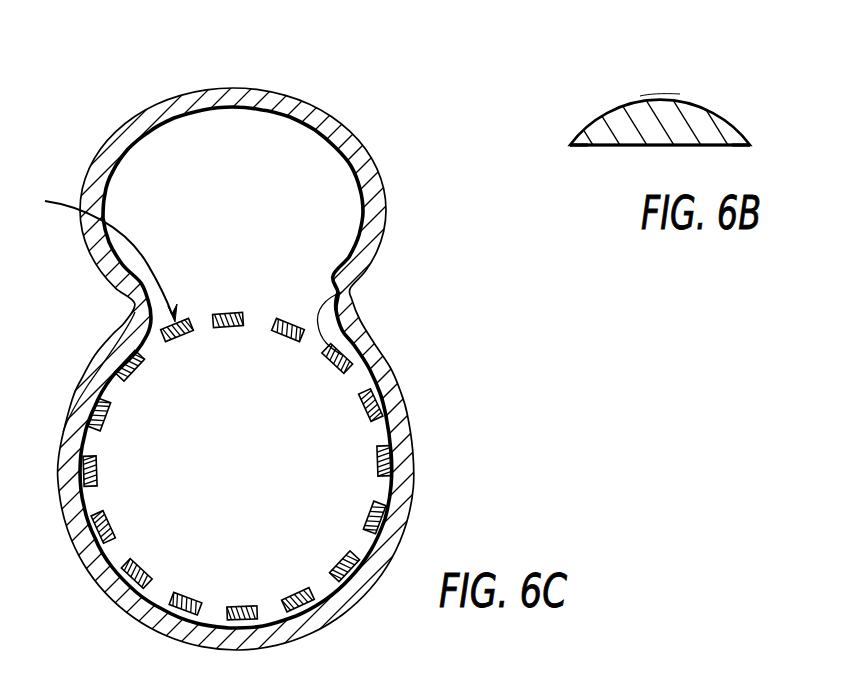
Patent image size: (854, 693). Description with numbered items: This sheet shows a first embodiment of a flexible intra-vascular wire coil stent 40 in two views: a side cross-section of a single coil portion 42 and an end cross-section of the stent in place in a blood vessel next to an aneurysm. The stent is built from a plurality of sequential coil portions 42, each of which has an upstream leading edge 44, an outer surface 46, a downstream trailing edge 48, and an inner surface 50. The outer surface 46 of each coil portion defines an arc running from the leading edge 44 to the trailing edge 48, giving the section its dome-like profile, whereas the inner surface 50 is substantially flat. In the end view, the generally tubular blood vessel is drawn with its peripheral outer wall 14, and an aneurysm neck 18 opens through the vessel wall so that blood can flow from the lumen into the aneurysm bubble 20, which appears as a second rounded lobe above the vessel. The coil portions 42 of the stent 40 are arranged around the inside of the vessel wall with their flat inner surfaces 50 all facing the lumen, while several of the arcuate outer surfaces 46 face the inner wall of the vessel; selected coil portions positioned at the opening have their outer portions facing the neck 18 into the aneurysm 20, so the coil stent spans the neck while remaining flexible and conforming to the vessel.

In FIG. 6C, the peripheral outer wall 14 is at (410, 418).
In FIG. 6C, the aneurysm neck 18 is at (288, 305).
In FIG. 6C, the aneurysm bubble 20 is at (283, 138).
In FIG. 6C, the flexible intra-vascular wire coil stent 40 is at (97, 255).
In FIG. 6C, the coil portion 42 is at (124, 354).
In FIG. 6B, the coil portion 42 is at (624, 112).
In FIG. 6B, the upstream leading edge 44 is at (571, 145).
In FIG. 6B, the outer surface 46 is at (675, 93).
In FIG. 6B, the downstream trailing edge 48 is at (751, 144).
In FIG. 6B, the inner surface 50 is at (608, 147).